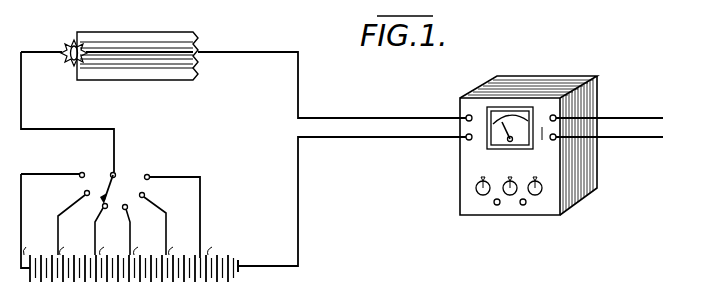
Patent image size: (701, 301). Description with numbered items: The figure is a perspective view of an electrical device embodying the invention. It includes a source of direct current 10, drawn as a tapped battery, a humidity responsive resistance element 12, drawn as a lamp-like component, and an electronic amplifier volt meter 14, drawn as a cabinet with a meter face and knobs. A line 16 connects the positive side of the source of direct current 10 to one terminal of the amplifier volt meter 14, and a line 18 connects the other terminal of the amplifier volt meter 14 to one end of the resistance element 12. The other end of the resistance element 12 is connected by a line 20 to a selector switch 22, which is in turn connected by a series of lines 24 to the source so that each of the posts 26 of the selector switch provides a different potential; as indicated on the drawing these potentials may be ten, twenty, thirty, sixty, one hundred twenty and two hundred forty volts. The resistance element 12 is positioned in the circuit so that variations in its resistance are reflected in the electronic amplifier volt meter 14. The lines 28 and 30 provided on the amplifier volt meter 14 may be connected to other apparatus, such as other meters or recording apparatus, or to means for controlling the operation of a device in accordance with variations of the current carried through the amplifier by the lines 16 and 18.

The source of direct current 10 is at (223, 277).
The humidity responsive resistance element 12 is at (185, 33).
The electronic amplifier volt meter 14 is at (580, 53).
The line 16 is at (298, 200).
The line 18 is at (298, 85).
The line 20 is at (21, 104).
The selector switch 22 is at (127, 177).
The lines 24 is at (166, 218).
The posts 26 is at (150, 173).
The line 28 is at (620, 117).
The line 30 is at (613, 138).